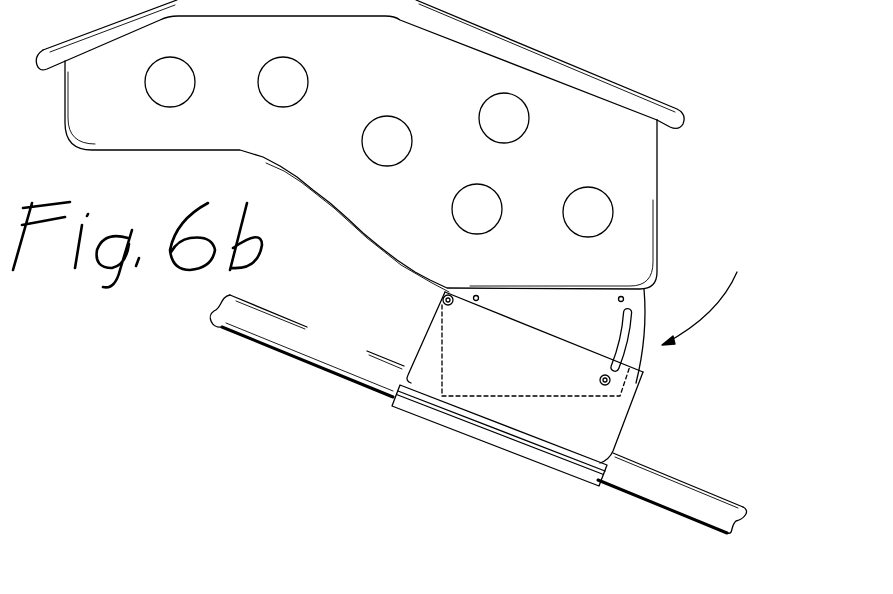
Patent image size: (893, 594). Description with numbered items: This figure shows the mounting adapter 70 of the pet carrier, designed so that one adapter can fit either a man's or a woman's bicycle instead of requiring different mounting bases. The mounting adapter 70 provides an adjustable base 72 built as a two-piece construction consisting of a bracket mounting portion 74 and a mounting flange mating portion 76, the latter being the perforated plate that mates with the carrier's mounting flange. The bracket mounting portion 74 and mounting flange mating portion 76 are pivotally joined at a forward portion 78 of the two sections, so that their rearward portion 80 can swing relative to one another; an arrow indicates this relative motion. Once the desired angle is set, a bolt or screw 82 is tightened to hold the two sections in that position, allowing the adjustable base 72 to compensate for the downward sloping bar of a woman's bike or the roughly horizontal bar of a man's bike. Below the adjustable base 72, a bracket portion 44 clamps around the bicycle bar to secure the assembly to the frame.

The bracket portion 44 is at (470, 428).
The mounting adapter 70 is at (768, 282).
The adjustable base 72 is at (372, 278).
The bracket mounting portion 74 is at (603, 420).
The mounting flange mating portion 76 is at (637, 303).
The forward portion 78 is at (444, 296).
The rearward portion 80 is at (713, 294).
The bolt or screw 82 is at (602, 381).